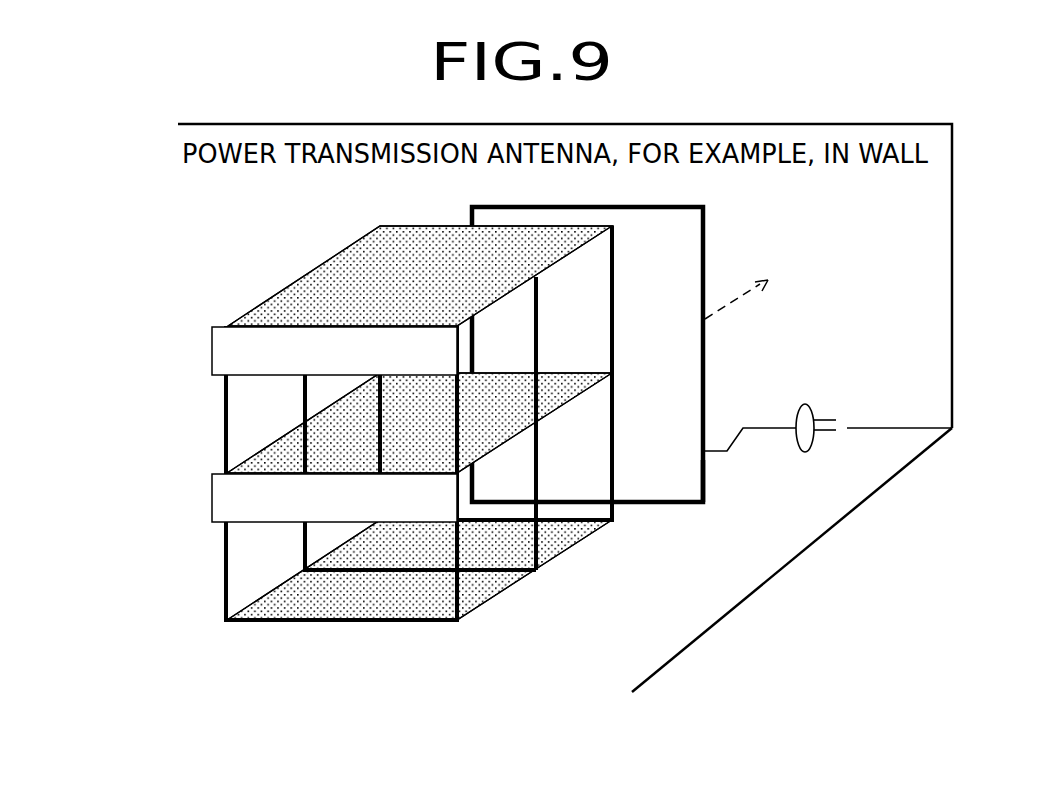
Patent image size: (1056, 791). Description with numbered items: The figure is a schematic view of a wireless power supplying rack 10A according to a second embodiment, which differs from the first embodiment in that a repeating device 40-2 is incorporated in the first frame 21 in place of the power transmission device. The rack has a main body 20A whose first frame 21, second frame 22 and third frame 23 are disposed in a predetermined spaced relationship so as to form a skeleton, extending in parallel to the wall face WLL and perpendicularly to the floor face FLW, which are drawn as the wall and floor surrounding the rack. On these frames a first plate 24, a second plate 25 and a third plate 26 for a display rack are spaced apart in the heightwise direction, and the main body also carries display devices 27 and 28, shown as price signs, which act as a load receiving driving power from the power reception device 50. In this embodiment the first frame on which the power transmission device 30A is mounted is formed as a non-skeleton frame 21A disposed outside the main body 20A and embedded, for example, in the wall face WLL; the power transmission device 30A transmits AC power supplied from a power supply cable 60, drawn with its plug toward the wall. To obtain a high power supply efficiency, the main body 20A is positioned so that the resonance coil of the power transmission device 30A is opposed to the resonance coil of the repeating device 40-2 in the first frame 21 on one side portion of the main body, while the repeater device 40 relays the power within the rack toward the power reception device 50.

The wireless power supplying rack 10A is at (570, 474).
The main body 20A is at (453, 470).
The first frame 21 is at (613, 297).
The non-skeleton frame 21A is at (705, 240).
The second frame 22 is at (537, 343).
The third frame 23 is at (427, 622).
The first plate 24 is at (300, 290).
The second plate 25 is at (276, 445).
The third plate 26 is at (297, 605).
The display device 27 is at (221, 326).
The display device 28 is at (216, 472).
The power transmission device 30A is at (705, 483).
The repeater device 40 is at (538, 571).
The repeating device 40-2 is at (614, 521).
The power reception device 50 is at (460, 621).
The power supply cable 60 is at (768, 428).
The wall face WLL is at (953, 290).
The floor face FLW is at (688, 648).